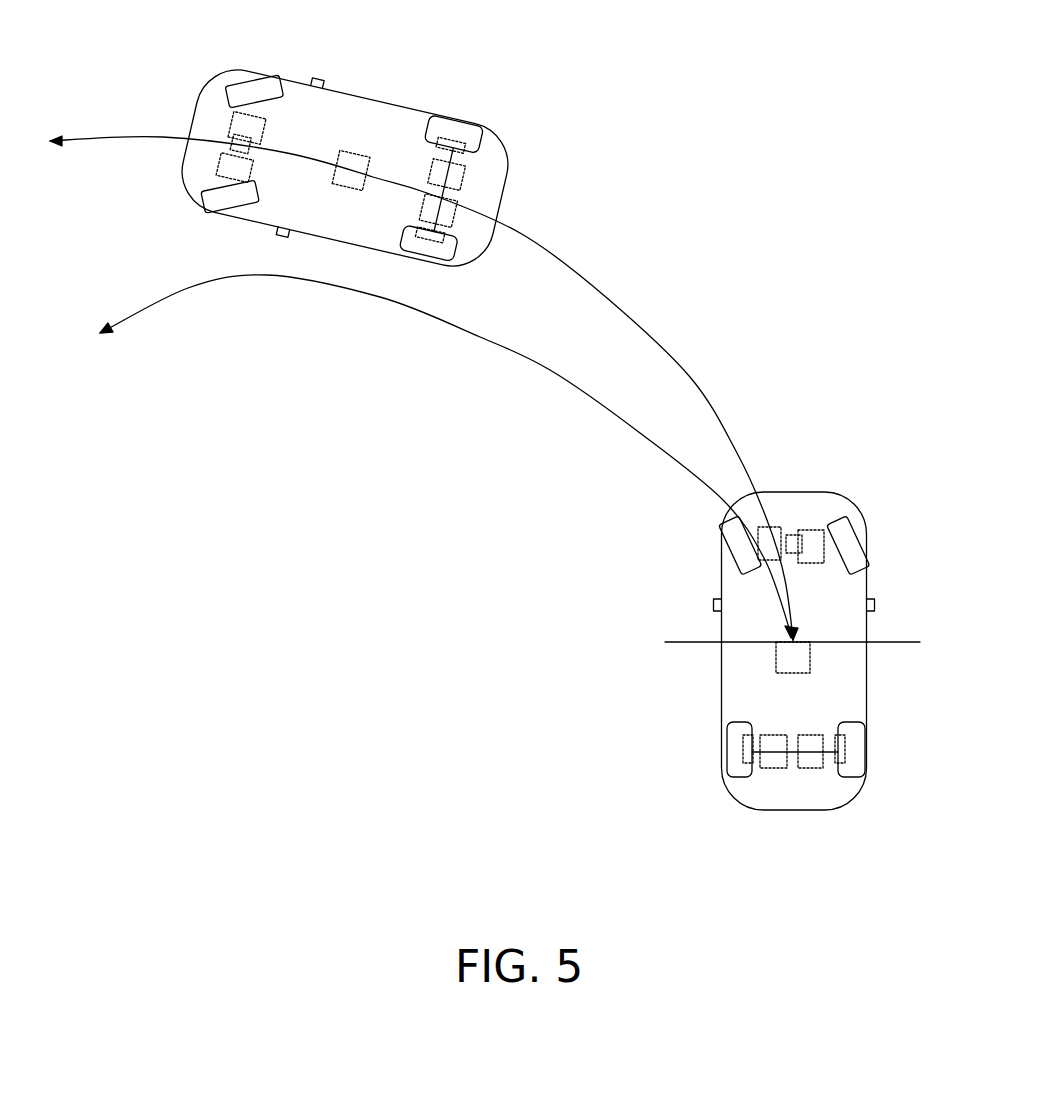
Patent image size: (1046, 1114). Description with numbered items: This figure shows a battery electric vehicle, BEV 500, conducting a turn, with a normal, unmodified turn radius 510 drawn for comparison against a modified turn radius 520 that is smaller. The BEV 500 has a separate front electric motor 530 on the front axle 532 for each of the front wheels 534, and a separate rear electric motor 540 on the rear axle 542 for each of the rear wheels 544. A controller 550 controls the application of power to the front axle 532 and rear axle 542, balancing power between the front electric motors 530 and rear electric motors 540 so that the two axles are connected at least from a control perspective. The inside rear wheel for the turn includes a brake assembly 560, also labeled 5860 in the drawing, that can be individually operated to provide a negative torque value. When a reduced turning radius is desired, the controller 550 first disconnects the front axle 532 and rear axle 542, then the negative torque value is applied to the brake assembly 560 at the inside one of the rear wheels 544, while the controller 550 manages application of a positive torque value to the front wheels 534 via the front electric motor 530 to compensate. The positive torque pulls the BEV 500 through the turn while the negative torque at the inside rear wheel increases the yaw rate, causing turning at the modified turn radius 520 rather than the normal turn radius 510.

The BEV 500 is at (387, 107).
The normal turn radius 510 is at (610, 295).
The modified turn radius 520 is at (188, 288).
The front electric motor 530 is at (248, 118).
The front axle 532 is at (238, 140).
The front wheels 534 is at (248, 85).
The rear electric motor 540 is at (782, 768).
The rear axle 542 is at (438, 197).
The rear wheels 544 is at (855, 745).
The controller 550 is at (328, 180).
The brake assembly 560 is at (442, 240).
The brake unit 5860 is at (752, 762).